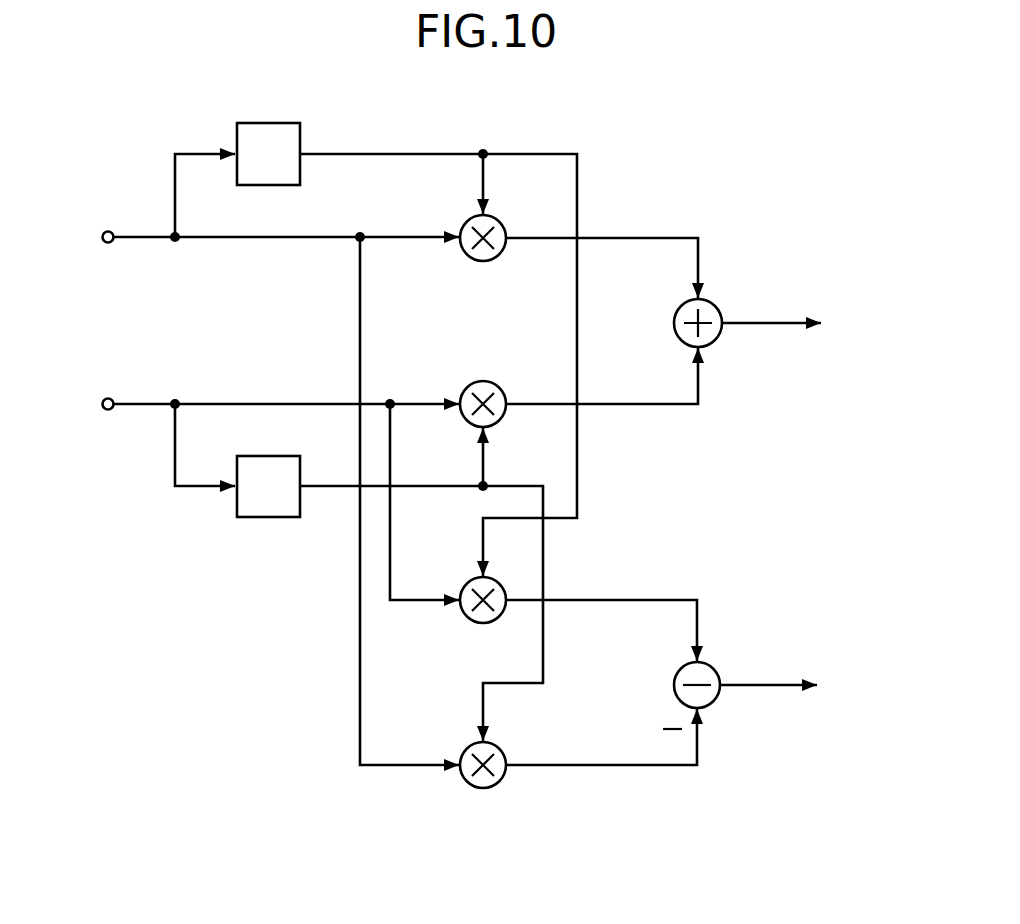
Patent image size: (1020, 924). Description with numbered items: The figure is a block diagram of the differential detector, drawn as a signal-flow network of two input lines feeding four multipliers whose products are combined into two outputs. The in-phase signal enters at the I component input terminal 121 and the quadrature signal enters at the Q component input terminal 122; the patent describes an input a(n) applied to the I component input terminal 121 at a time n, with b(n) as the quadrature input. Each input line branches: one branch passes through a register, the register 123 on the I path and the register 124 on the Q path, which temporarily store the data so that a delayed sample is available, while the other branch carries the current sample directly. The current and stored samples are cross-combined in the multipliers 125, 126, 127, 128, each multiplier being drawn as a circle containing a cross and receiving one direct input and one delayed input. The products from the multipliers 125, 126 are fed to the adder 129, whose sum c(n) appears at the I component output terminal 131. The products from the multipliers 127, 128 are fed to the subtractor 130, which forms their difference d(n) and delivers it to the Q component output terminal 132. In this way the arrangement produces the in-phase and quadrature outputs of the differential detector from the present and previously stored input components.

The I component input terminal 121 is at (105, 232).
The Q component input terminal 122 is at (105, 413).
The register 123 is at (270, 123).
The register 124 is at (263, 518).
The multiplier 125 is at (466, 255).
The multiplier 126 is at (500, 388).
The multiplier 127 is at (467, 618).
The multiplier 128 is at (467, 783).
The adder 129 is at (681, 340).
The subtractor 130 is at (674, 685).
The I component output terminal 131 is at (823, 323).
The Q component output terminal 132 is at (821, 685).